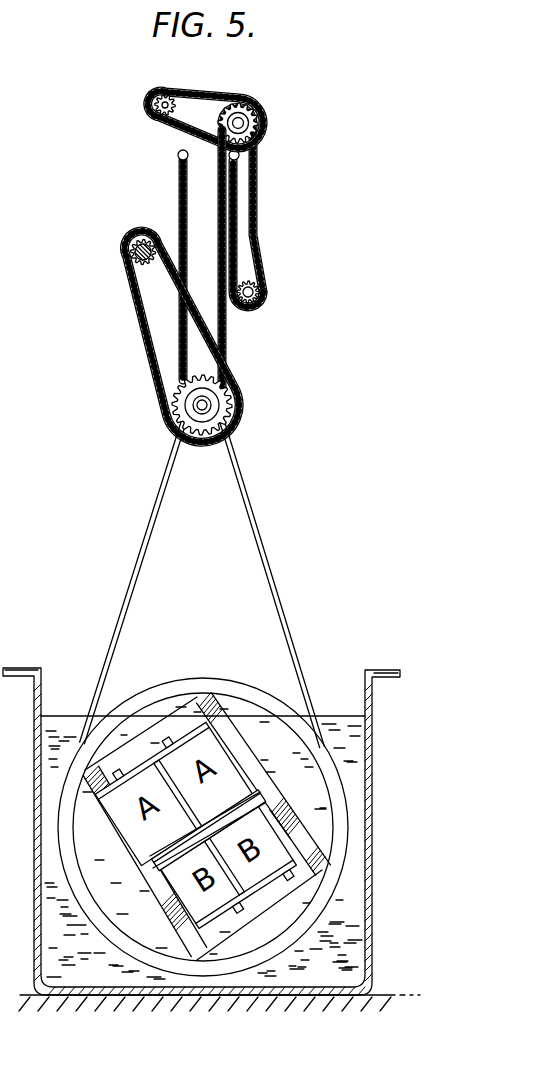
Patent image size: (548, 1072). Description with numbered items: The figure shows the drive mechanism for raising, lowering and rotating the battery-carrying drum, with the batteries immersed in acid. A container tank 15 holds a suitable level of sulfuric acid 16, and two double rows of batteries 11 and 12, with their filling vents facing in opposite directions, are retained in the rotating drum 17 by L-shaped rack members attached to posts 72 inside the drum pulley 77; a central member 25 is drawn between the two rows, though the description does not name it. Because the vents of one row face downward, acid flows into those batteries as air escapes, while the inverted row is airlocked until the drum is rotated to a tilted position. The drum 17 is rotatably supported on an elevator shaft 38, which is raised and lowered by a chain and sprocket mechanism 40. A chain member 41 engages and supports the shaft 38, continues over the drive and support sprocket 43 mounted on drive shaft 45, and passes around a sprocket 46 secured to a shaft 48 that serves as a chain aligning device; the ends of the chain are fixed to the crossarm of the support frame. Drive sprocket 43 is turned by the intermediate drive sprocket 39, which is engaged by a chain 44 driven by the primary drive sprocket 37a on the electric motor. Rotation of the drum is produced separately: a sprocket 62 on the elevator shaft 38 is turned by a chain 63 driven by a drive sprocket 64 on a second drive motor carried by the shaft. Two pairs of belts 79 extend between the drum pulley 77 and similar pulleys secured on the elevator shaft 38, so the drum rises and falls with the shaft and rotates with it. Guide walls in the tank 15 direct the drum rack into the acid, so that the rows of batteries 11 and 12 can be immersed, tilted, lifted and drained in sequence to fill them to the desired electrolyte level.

The batteries 11 is at (222, 764).
The batteries 12 is at (263, 829).
The container tank 15 is at (374, 672).
The sulfuric acid 16 is at (342, 728).
The rotating drum 17 is at (255, 682).
The divider bar 25 is at (242, 789).
The primary drive sprocket 37a is at (155, 112).
The elevator shaft 38 is at (214, 404).
The intermediate drive sprocket 39 is at (235, 106).
The chain and sprocket mechanism 40 is at (262, 187).
The chain member 41 is at (178, 201).
The drive and support sprocket 43 is at (258, 133).
The chain 44 is at (221, 96).
The drive shaft 45 is at (254, 119).
The sprocket 46 is at (250, 278).
The shaft 48 is at (254, 292).
The sprocket 62 is at (176, 408).
The chain 63 is at (151, 354).
The drive sprocket 64 is at (132, 252).
The posts 72 is at (132, 872).
The pulley 77 is at (168, 686).
The belts 79 is at (142, 554).